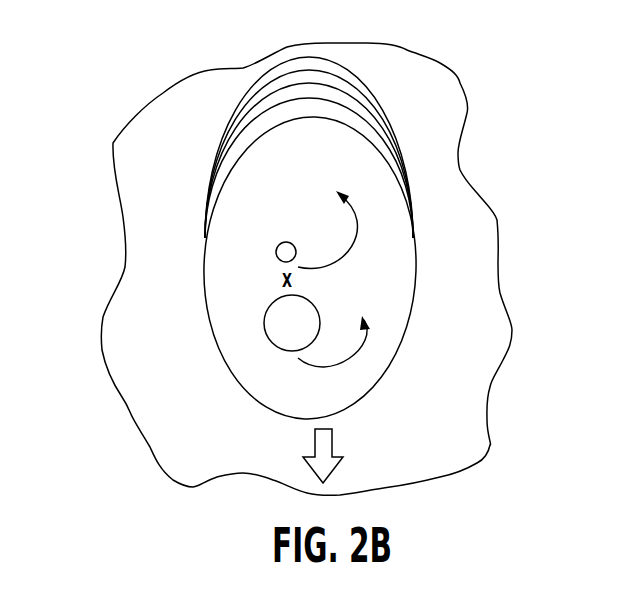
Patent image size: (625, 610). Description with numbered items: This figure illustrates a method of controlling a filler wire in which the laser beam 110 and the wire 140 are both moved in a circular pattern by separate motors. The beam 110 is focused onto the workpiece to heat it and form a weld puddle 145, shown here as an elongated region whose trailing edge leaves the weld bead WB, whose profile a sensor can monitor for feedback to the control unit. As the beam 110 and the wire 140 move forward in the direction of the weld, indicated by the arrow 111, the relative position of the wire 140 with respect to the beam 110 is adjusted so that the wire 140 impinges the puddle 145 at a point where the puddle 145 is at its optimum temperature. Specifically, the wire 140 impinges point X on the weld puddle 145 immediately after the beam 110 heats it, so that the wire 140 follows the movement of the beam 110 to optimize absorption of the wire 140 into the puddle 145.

The weld bead WB is at (395, 118).
The weld puddle 145 is at (415, 295).
The wire 140 is at (270, 242).
The laser beam 110 is at (268, 333).
The arrow 111 is at (332, 439).